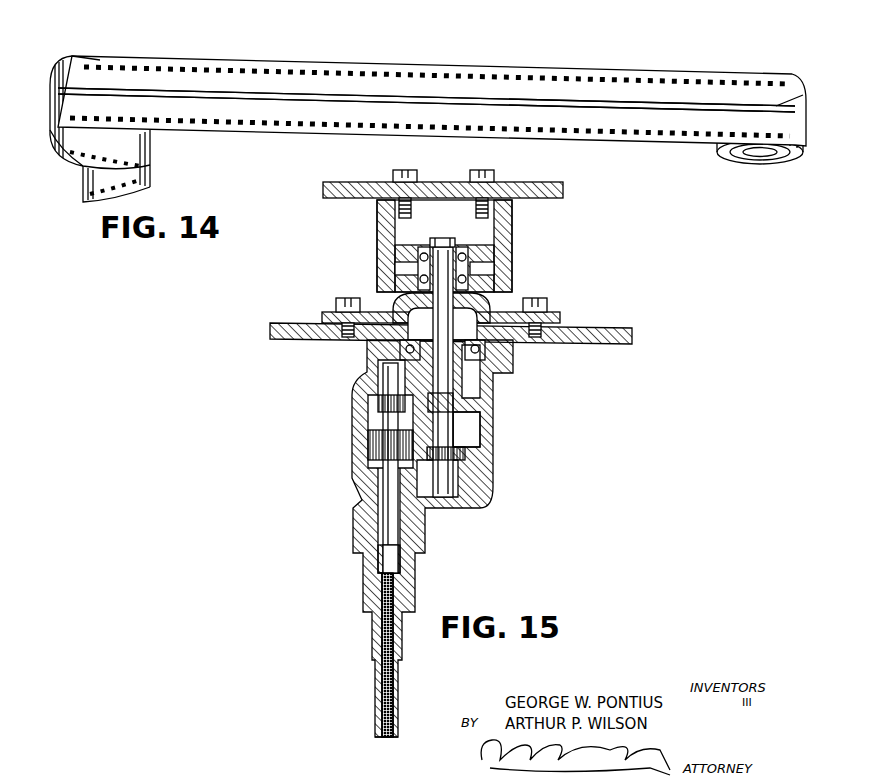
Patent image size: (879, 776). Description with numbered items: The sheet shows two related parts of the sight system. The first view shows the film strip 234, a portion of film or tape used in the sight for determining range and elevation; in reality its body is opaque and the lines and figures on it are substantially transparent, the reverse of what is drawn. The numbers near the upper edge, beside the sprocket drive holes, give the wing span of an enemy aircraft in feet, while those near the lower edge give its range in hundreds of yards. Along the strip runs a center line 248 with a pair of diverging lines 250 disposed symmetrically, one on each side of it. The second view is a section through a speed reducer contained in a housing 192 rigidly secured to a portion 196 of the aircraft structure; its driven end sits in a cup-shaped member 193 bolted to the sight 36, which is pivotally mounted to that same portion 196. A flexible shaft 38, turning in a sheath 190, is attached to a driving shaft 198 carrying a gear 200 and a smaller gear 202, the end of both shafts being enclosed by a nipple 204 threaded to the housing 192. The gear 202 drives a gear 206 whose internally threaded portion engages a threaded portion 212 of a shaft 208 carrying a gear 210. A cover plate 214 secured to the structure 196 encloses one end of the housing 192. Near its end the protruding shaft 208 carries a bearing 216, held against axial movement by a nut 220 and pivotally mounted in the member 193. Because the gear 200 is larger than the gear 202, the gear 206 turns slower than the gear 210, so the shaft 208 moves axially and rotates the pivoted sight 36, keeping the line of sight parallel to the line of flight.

In FIG. 14, the film strip 234 is at (470, 61).
In FIG. 14, the diverging lines 250 is at (583, 93).
In FIG. 14, the center line 248 is at (703, 107).
In FIG. 15, the sight 36 is at (560, 184).
In FIG. 15, the cup-shaped member 193 is at (512, 226).
In FIG. 15, the bearing 216 is at (512, 251).
In FIG. 15, the nut 220 is at (455, 225).
In FIG. 15, the cover plate 214 is at (486, 306).
In FIG. 15, the portion of the aircraft structure 196 is at (610, 334).
In FIG. 15, the housing 192 is at (358, 420).
In FIG. 15, the gear 202 is at (376, 403).
In FIG. 15, the gear 200 is at (372, 445).
In FIG. 15, the gear 206 is at (466, 408).
In FIG. 15, the threaded portion 212 is at (463, 419).
In FIG. 15, the shaft 208 is at (446, 432).
In FIG. 15, the gear 210 is at (466, 456).
In FIG. 15, the driving shaft 198 is at (386, 503).
In FIG. 15, the nipple 204 is at (360, 549).
In FIG. 15, the sheath 190 is at (399, 686).
In FIG. 15, the flexible shaft 38 is at (386, 737).